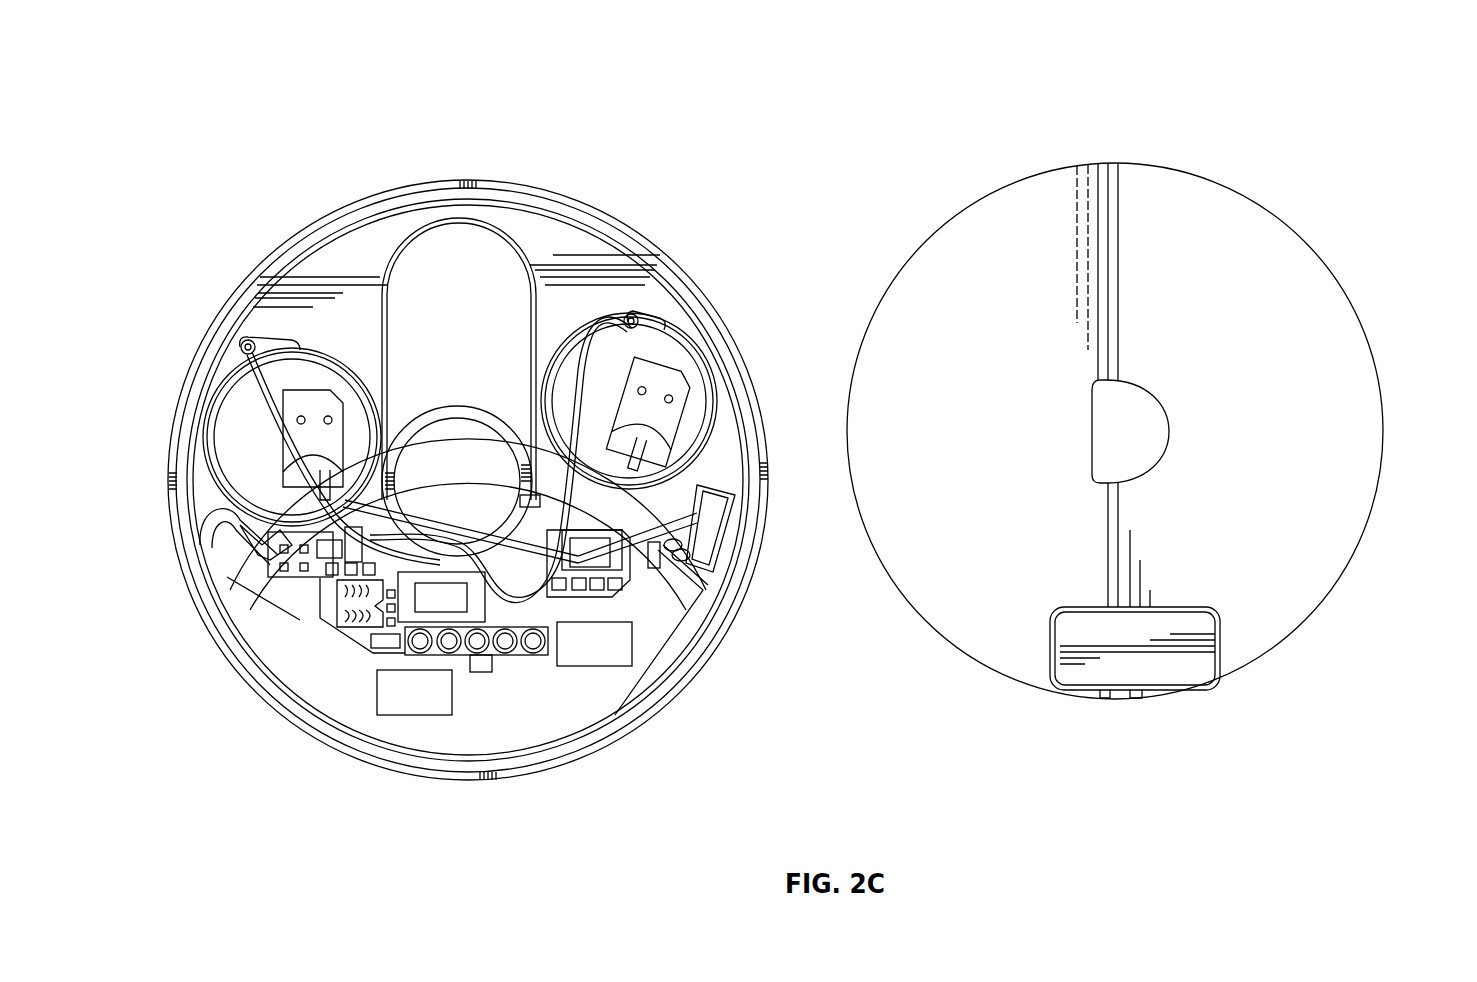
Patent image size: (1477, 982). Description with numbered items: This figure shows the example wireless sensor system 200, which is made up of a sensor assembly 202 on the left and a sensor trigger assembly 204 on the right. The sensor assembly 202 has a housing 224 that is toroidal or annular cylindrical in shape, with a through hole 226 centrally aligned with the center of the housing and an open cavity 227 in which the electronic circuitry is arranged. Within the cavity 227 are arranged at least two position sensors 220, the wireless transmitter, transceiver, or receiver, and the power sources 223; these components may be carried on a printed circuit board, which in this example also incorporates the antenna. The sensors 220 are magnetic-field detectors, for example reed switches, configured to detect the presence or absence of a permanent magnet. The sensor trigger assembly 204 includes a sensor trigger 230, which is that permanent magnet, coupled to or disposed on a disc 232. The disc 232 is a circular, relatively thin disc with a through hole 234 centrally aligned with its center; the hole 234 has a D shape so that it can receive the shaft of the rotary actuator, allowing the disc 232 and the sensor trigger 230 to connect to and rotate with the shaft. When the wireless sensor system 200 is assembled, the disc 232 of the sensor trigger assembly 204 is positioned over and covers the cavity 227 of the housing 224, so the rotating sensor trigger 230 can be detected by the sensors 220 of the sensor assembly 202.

The wireless sensor system 200 is at (930, 46).
The sensor assembly 202 is at (440, 491).
The sensor trigger assembly 204 is at (1152, 439).
The position sensors 220 is at (480, 705).
The power source 223 is at (233, 433).
The housing 224 is at (330, 213).
The through hole 226 is at (455, 443).
The open cavity 227 is at (303, 285).
The sensor trigger 230 is at (1200, 660).
The disc 232 is at (1370, 376).
The through hole 234 is at (1142, 410).